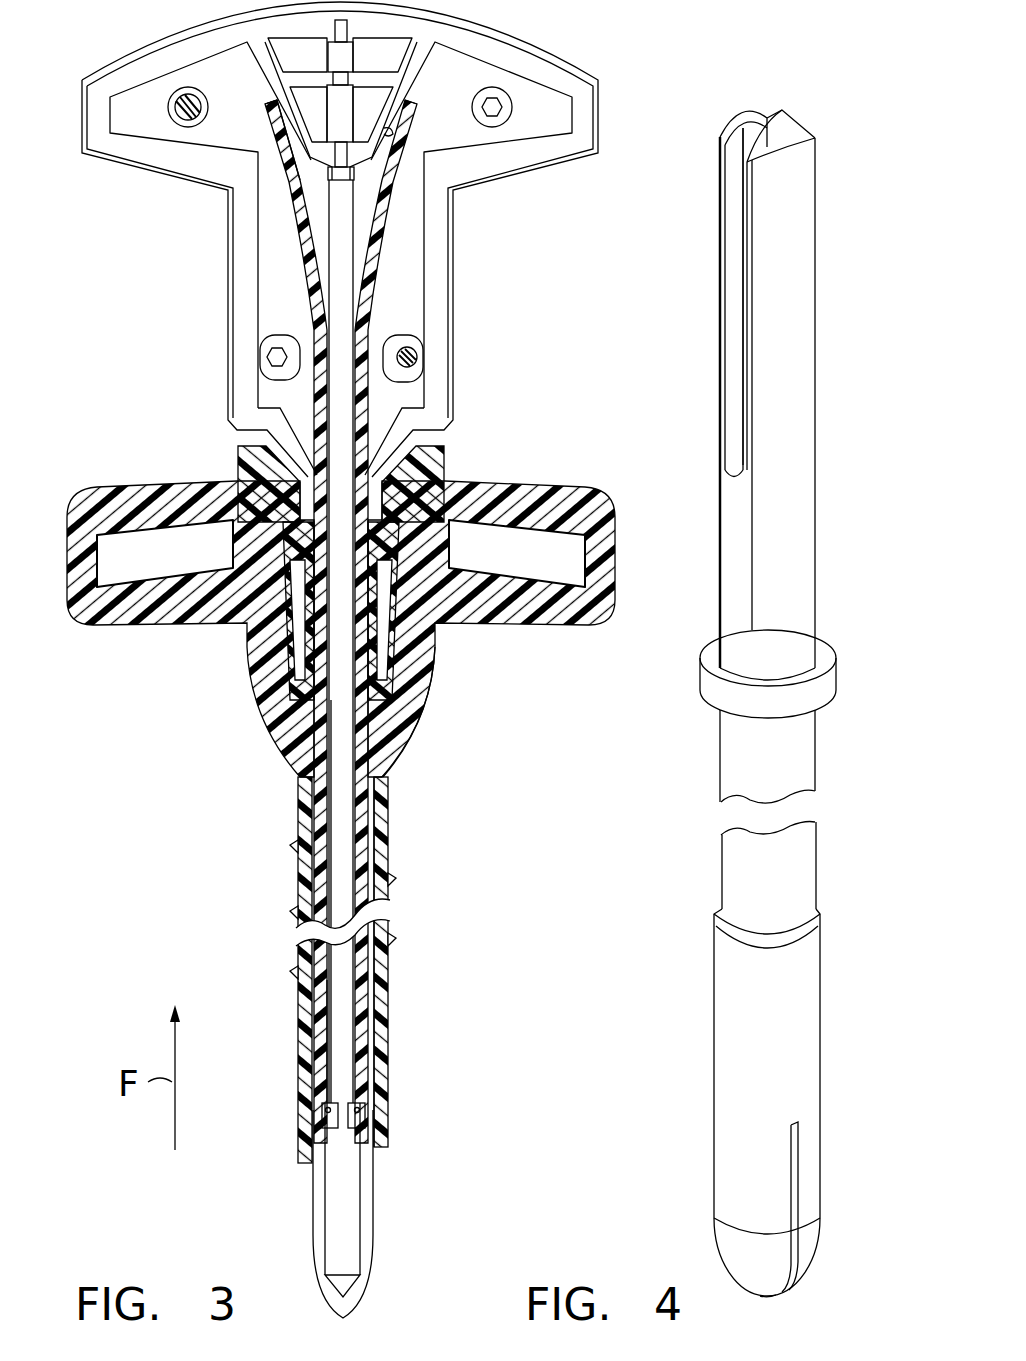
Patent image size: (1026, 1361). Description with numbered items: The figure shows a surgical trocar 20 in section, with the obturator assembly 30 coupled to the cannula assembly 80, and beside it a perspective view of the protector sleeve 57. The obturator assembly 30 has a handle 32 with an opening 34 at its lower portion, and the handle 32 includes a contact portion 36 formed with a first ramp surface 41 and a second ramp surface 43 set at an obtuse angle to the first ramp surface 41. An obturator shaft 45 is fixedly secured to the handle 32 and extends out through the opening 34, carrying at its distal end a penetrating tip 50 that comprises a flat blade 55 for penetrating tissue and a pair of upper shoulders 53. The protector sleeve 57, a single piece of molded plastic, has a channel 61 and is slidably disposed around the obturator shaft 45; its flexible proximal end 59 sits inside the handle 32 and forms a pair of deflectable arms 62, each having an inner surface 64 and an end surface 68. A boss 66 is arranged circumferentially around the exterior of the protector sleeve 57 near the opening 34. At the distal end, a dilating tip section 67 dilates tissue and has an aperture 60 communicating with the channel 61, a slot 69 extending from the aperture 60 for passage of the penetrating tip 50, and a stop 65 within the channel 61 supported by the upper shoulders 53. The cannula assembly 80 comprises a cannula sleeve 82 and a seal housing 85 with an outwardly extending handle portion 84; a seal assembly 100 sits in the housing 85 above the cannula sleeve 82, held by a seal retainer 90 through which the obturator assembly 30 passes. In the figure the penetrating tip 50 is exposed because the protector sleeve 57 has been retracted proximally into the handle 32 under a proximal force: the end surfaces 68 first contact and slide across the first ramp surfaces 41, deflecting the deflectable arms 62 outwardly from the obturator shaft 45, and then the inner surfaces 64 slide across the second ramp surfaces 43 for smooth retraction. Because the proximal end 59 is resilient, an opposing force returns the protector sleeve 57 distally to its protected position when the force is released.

In FIG. 3, the surgical trocar 20 is at (215, 300).
In FIG. 3, the obturator assembly 30 is at (458, 273).
In FIG. 3, the handle 32 is at (195, 42).
In FIG. 3, the opening 34 is at (343, 447).
In FIG. 3, the contact portion 36 is at (262, 95).
In FIG. 3, the first ramp surface 41 is at (313, 165).
In FIG. 3, the second ramp surface 43 is at (278, 152).
In FIG. 3, the obturator shaft 45 is at (340, 776).
In FIG. 3, the penetrating tip 50 is at (312, 1247).
In FIG. 3, the upper shoulders 53 is at (362, 1122).
In FIG. 3, the flat blade 55 is at (352, 1297).
In FIG. 3, the protector sleeve 57 is at (372, 1033).
In FIG. 4, the protector sleeve 57 is at (825, 415).
In FIG. 3, the flexible proximal end 59 is at (400, 196).
In FIG. 4, the flexible proximal end 59 is at (707, 333).
In FIG. 4, the aperture 60 is at (766, 1298).
In FIG. 4, the channel 61 is at (755, 138).
In FIG. 3, the deflectable arms 62 is at (397, 173).
In FIG. 4, the deflectable arms 62 is at (718, 230).
In FIG. 3, the inner surface 64 is at (392, 136).
In FIG. 4, the inner surface 64 is at (735, 192).
In FIG. 3, the stop 65 is at (353, 1000).
In FIG. 3, the boss 66 is at (258, 480).
In FIG. 4, the boss 66 is at (713, 655).
In FIG. 3, the dilating tip section 67 is at (377, 1192).
In FIG. 4, the dilating tip section 67 is at (807, 1252).
In FIG. 3, the end surface 68 is at (268, 100).
In FIG. 4, the end surface 68 is at (742, 122).
In FIG. 4, the slot 69 is at (795, 1166).
In FIG. 3, the cannula assembly 80 is at (297, 893).
In FIG. 3, the cannula sleeve 82 is at (380, 853).
In FIG. 3, the handle portion 84 is at (510, 613).
In FIG. 3, the seal housing 85 is at (422, 673).
In FIG. 3, the seal retainer 90 is at (455, 478).
In FIG. 3, the seal assembly 100 is at (303, 633).